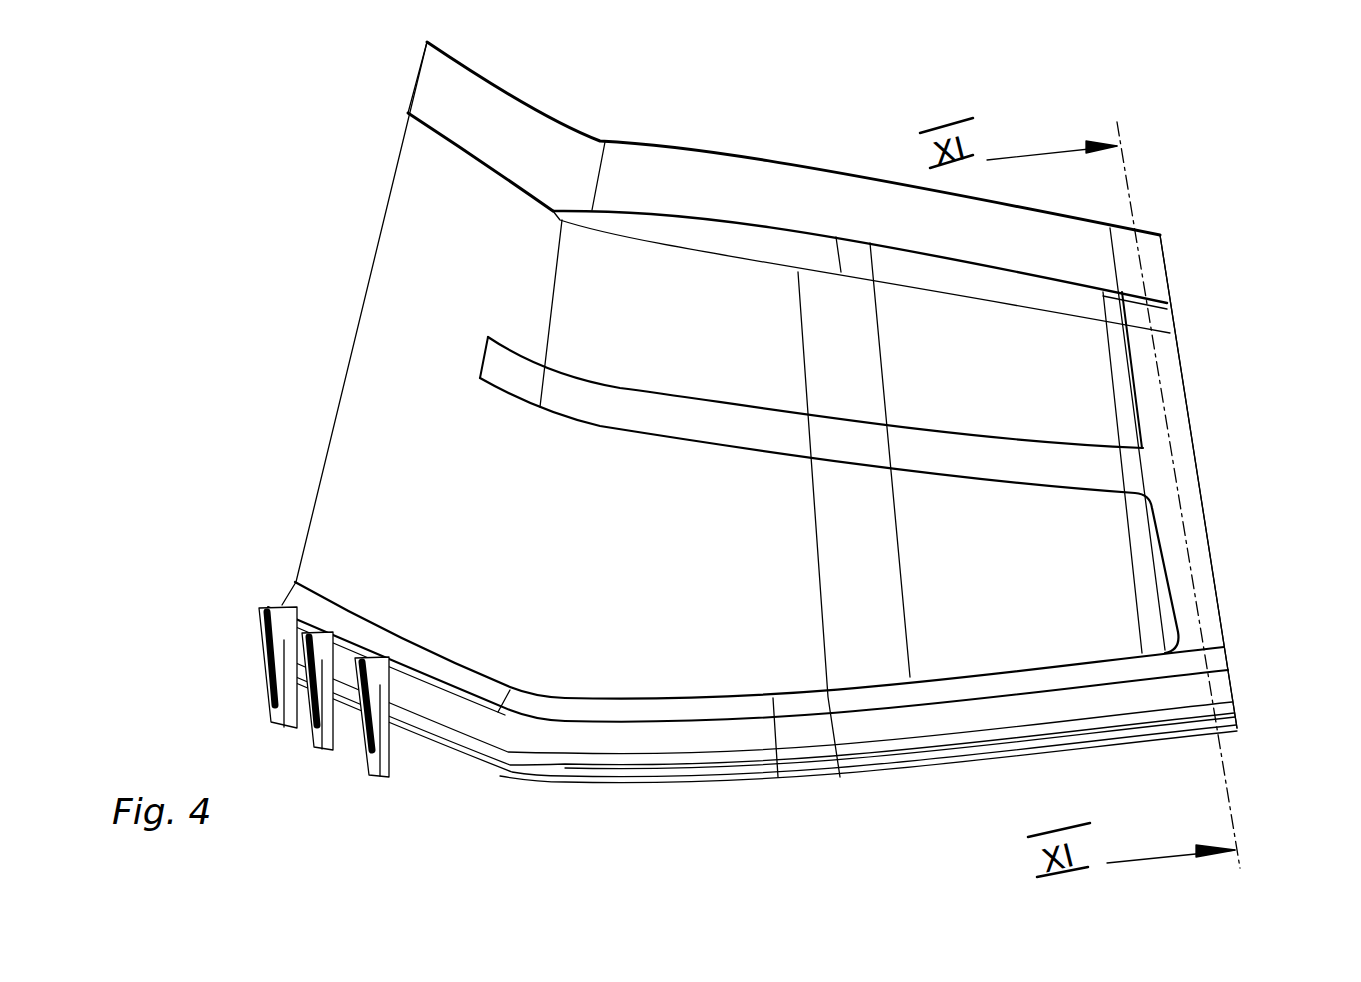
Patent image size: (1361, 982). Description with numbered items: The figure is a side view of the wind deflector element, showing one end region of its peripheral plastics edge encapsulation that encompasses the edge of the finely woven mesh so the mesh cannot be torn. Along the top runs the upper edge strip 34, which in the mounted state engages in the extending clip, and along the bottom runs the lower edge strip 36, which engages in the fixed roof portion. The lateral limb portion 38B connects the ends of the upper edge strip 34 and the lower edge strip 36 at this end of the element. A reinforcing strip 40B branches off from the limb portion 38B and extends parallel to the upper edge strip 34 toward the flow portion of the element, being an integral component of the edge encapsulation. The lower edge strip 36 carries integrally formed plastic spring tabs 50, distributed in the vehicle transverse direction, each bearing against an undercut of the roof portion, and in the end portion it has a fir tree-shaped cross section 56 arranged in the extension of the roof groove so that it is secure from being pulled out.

The upper edge strip 34 is at (524, 133).
The reinforcing strip 40B is at (980, 455).
The lateral limb portion 38B is at (1192, 538).
The lower edge strip 36 is at (450, 723).
The fir tree-shaped cross section 56 is at (885, 752).
The plastic spring tabs 50 is at (326, 748).